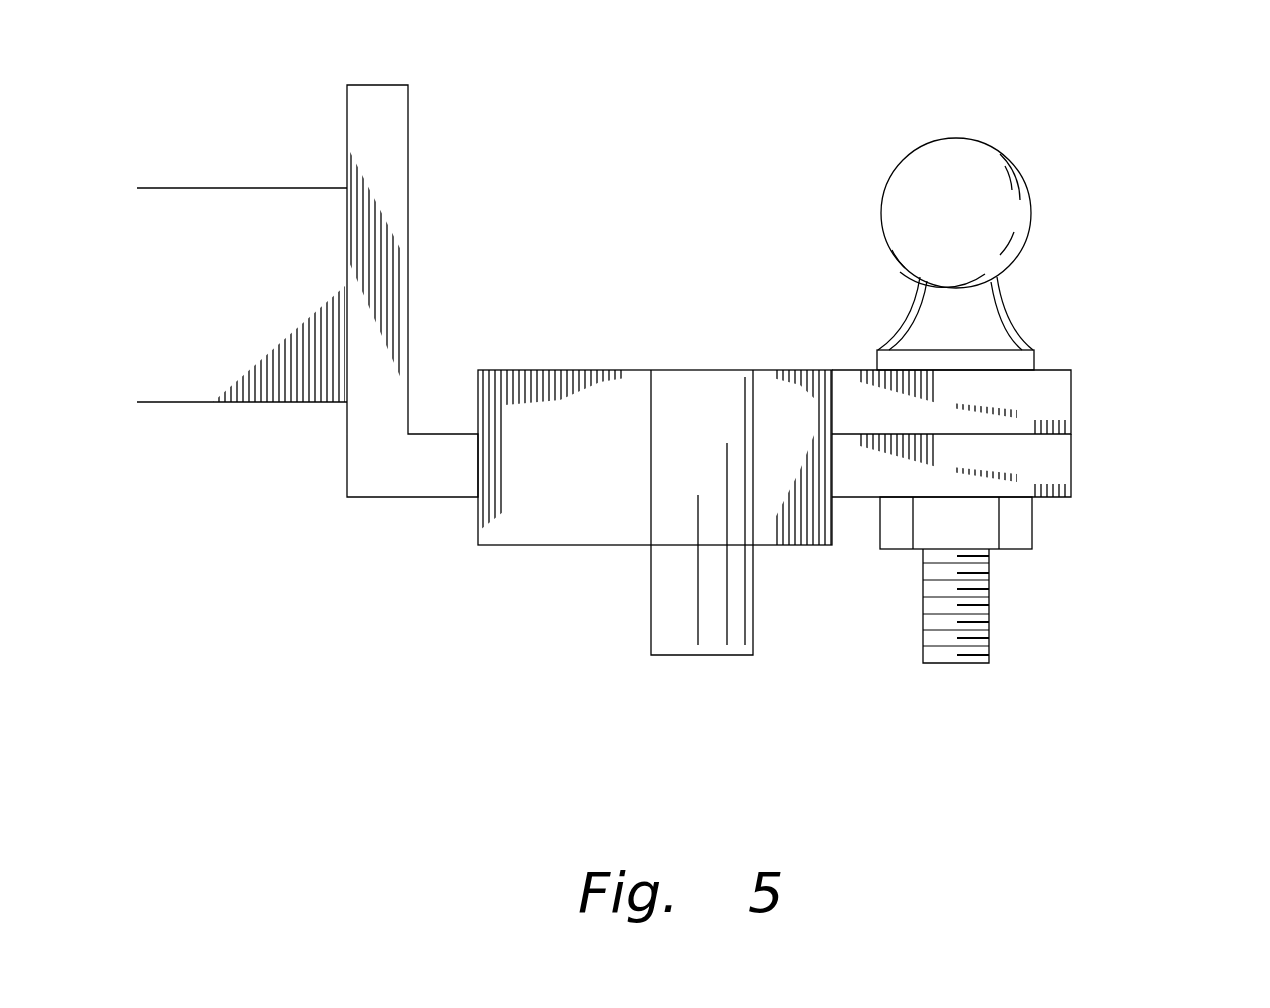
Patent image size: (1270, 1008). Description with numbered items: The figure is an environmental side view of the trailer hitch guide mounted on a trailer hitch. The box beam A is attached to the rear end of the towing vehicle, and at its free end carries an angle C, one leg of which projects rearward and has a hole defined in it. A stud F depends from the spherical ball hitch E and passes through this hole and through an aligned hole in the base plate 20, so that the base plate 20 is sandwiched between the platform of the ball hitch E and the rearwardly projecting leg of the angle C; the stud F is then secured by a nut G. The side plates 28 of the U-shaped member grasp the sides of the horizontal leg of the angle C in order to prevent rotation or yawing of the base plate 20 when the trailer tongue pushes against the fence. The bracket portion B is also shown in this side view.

The box beam A is at (270, 188).
The L-shaped bracket B is at (347, 430).
The side plates 28 is at (573, 482).
The base plate 20 is at (858, 370).
The angle C is at (853, 482).
The spherical ball hitch E is at (970, 188).
The nut G is at (1020, 526).
The stud F is at (980, 618).